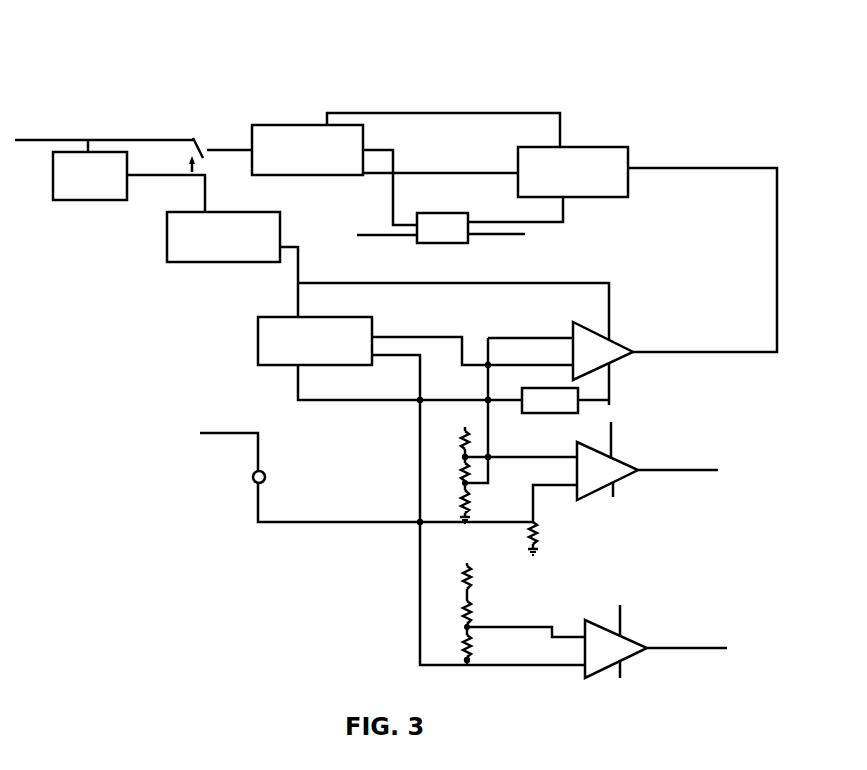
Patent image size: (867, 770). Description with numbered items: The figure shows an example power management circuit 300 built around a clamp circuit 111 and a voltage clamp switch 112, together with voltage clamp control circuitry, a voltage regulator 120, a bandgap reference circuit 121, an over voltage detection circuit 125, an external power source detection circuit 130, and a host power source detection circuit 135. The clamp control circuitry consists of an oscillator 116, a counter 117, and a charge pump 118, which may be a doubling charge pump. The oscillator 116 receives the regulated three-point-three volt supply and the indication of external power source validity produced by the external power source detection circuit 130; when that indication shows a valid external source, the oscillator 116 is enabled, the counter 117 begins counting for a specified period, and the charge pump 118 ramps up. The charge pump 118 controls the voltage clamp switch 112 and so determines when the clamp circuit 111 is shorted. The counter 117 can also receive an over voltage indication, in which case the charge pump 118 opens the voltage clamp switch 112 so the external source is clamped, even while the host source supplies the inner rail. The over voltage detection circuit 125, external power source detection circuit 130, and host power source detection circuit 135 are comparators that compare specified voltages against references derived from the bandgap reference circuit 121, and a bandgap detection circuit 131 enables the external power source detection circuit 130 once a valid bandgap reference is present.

The power management circuit 300 is at (672, 109).
The clamp circuit 111 is at (75, 200).
The voltage clamp switch 112 is at (198, 148).
The oscillator 116 is at (584, 147).
The counter 117 is at (436, 213).
The charge pump 118 is at (306, 125).
The voltage regulator 120 is at (197, 262).
The bandgap reference circuit 121 is at (276, 365).
The over voltage detection circuit 125 is at (601, 492).
The external power source detection circuit 130 is at (614, 361).
The bandgap detection circuit 131 is at (551, 413).
The host power source detection circuit 135 is at (605, 672).